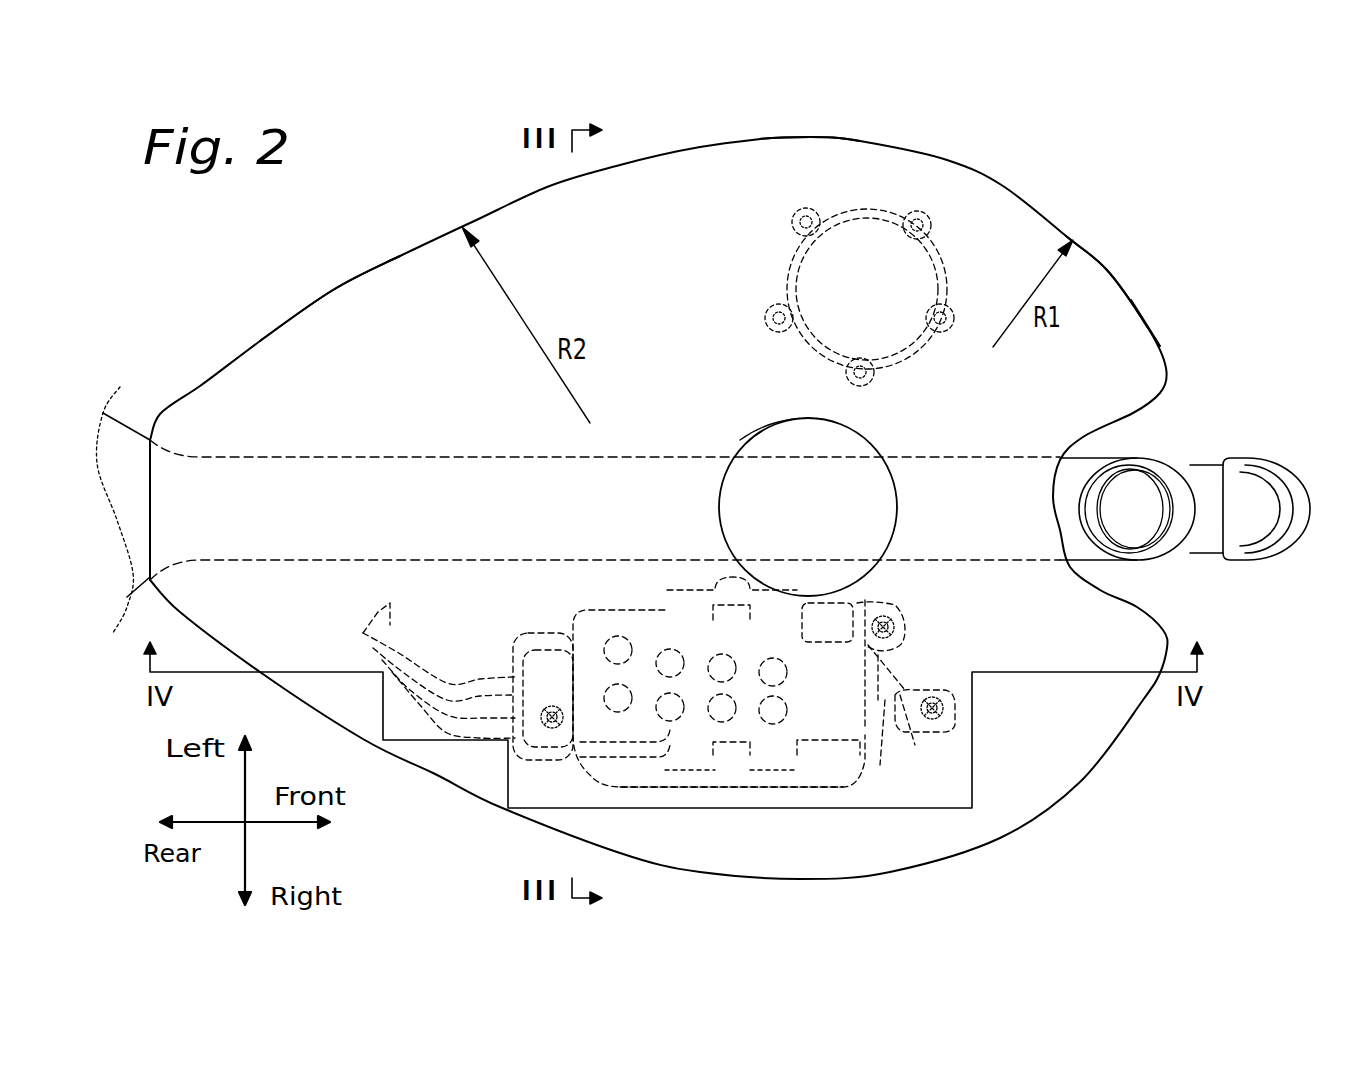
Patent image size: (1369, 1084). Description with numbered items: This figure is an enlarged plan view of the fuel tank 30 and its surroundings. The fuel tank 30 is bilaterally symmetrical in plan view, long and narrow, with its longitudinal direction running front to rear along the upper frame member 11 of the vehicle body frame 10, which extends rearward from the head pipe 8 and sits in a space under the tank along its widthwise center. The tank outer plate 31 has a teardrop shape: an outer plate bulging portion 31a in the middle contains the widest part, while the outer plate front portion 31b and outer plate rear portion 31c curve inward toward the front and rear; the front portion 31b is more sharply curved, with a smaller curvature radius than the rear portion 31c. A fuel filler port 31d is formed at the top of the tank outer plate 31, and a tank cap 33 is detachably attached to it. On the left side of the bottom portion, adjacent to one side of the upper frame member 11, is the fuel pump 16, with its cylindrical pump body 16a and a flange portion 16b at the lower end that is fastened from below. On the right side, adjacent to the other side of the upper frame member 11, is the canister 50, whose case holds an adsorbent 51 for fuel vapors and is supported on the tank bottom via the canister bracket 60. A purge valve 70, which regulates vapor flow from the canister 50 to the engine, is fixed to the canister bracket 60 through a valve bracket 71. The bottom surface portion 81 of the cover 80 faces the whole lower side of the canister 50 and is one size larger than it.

The head pipe 8 is at (1217, 497).
The vehicle body frame 10 is at (605, 471).
The upper frame member 11 is at (478, 457).
The fuel pump 16 is at (797, 297).
The pump body 16a is at (777, 282).
The flange portion 16b is at (782, 247).
The fuel tank 30 is at (1007, 184).
The tank outer plate 31 is at (1110, 273).
The outer plate bulging portion 31a is at (813, 138).
The outer plate front portion 31b is at (1150, 327).
The outer plate rear portion 31c is at (333, 288).
The fuel filler port 31d is at (760, 430).
The tank cap 33 is at (870, 433).
The canister 50 is at (905, 606).
The adsorbent 51 is at (633, 770).
The canister bracket 60 is at (572, 625).
The purge valve 70 is at (953, 729).
The valve bracket 71 is at (887, 742).
The cover 80 is at (766, 823).
The bottom surface portion 81 is at (845, 783).